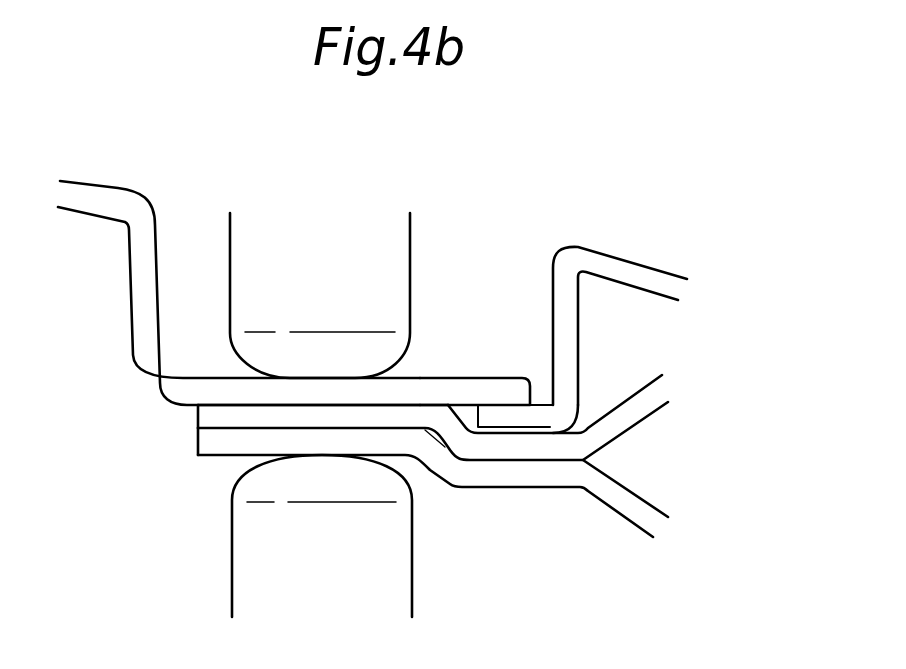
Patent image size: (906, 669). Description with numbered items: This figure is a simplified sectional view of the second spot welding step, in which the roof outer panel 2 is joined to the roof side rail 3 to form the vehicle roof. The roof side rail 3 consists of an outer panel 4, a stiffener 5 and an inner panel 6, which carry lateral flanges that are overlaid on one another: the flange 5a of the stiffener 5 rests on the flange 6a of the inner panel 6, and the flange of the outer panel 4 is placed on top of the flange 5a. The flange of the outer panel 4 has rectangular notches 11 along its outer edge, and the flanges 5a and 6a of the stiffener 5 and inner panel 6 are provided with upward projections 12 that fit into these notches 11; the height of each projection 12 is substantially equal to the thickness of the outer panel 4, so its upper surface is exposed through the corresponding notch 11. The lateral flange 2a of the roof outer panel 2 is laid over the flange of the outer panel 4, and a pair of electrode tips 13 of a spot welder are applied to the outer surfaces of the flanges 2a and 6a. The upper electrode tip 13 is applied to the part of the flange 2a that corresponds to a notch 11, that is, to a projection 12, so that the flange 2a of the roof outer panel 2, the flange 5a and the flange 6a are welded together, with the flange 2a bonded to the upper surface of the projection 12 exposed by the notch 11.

The roof outer panel 2 is at (116, 198).
The lateral flange of roof outer panel 2a is at (438, 390).
The roof side rail 3 is at (718, 303).
The outer panel 4 is at (646, 270).
The stiffener 5 is at (637, 398).
The flange of stiffener 5a is at (205, 417).
The inner panel 6 is at (632, 510).
The flange of inner panel 6a is at (207, 443).
The rectangular notch 11 is at (472, 412).
The upward projection 12 is at (231, 404).
The electrode tip 13 is at (393, 243).